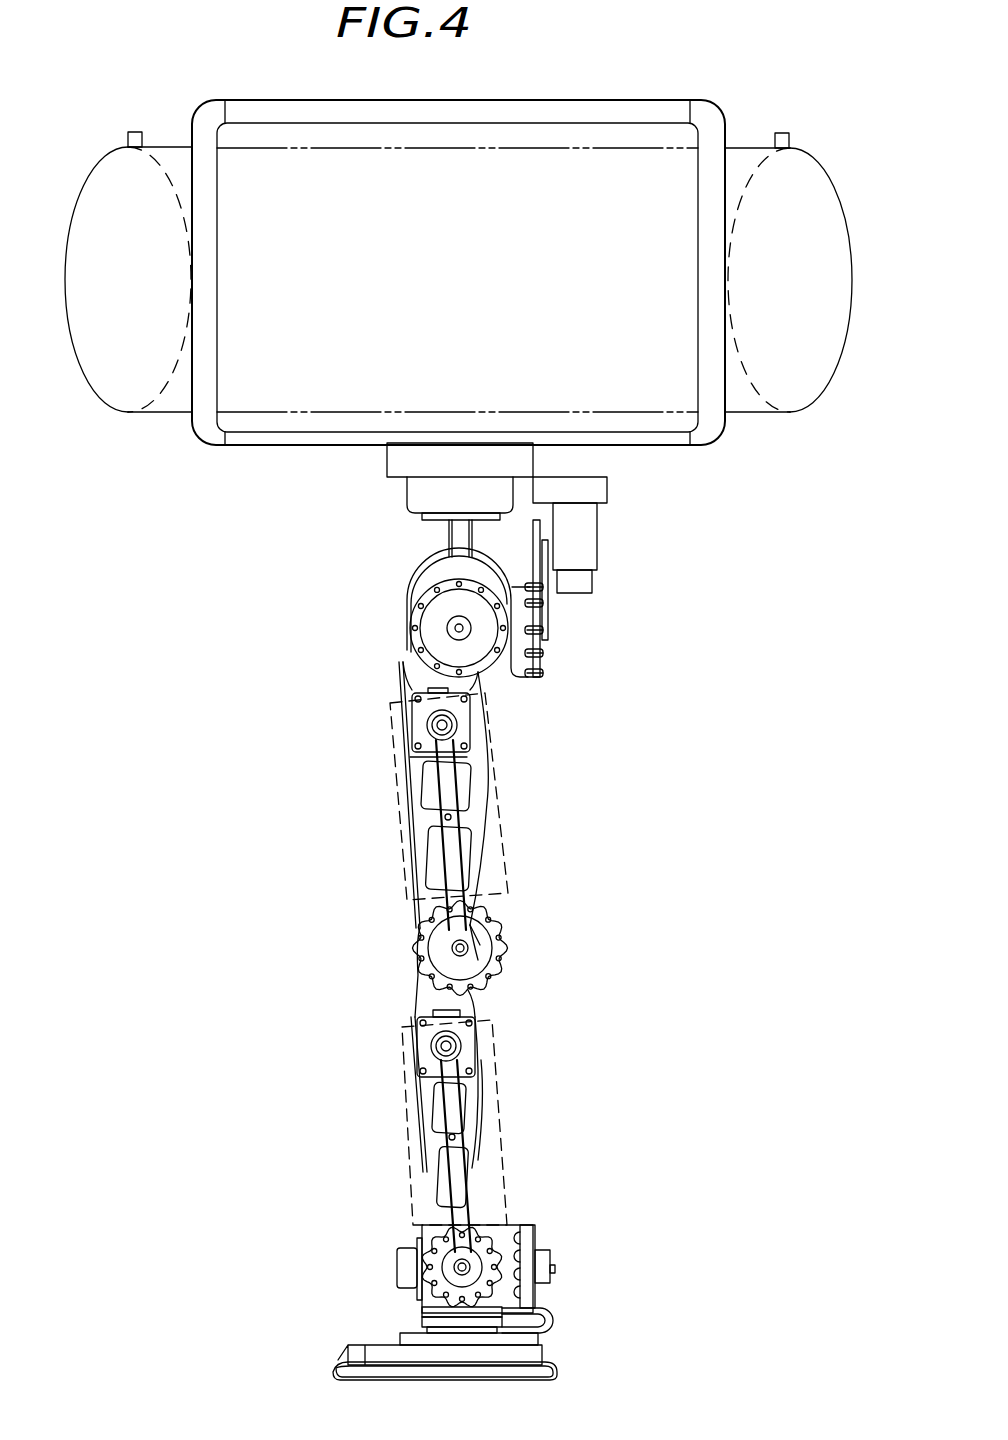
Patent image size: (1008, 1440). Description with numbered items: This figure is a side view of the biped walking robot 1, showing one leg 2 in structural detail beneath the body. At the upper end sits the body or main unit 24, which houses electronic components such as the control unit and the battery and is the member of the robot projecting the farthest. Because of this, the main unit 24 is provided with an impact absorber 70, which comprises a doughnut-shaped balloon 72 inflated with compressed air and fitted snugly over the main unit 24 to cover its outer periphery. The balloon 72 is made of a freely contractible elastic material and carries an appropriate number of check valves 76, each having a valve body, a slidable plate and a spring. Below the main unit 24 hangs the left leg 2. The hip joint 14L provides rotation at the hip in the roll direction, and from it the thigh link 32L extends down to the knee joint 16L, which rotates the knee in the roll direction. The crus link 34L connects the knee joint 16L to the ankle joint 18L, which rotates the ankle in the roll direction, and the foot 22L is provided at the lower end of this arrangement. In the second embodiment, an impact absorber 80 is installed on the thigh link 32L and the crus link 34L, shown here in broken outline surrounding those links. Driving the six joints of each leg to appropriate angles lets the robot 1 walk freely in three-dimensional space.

The biped walking robot 1 is at (612, 684).
The leg 2 is at (569, 897).
The hip roll joint 14L is at (480, 650).
The knee joint 16L is at (473, 948).
The ankle roll joint 18L is at (493, 1228).
The foot 22L is at (540, 1360).
The body (main unit) 24 is at (243, 102).
The thigh link 32L is at (485, 813).
The crus link 34L is at (480, 1103).
The impact absorber 70 is at (742, 121).
The balloon 72 is at (852, 228).
The valve 76 is at (128, 140).
The impact absorber 80 is at (400, 1053).